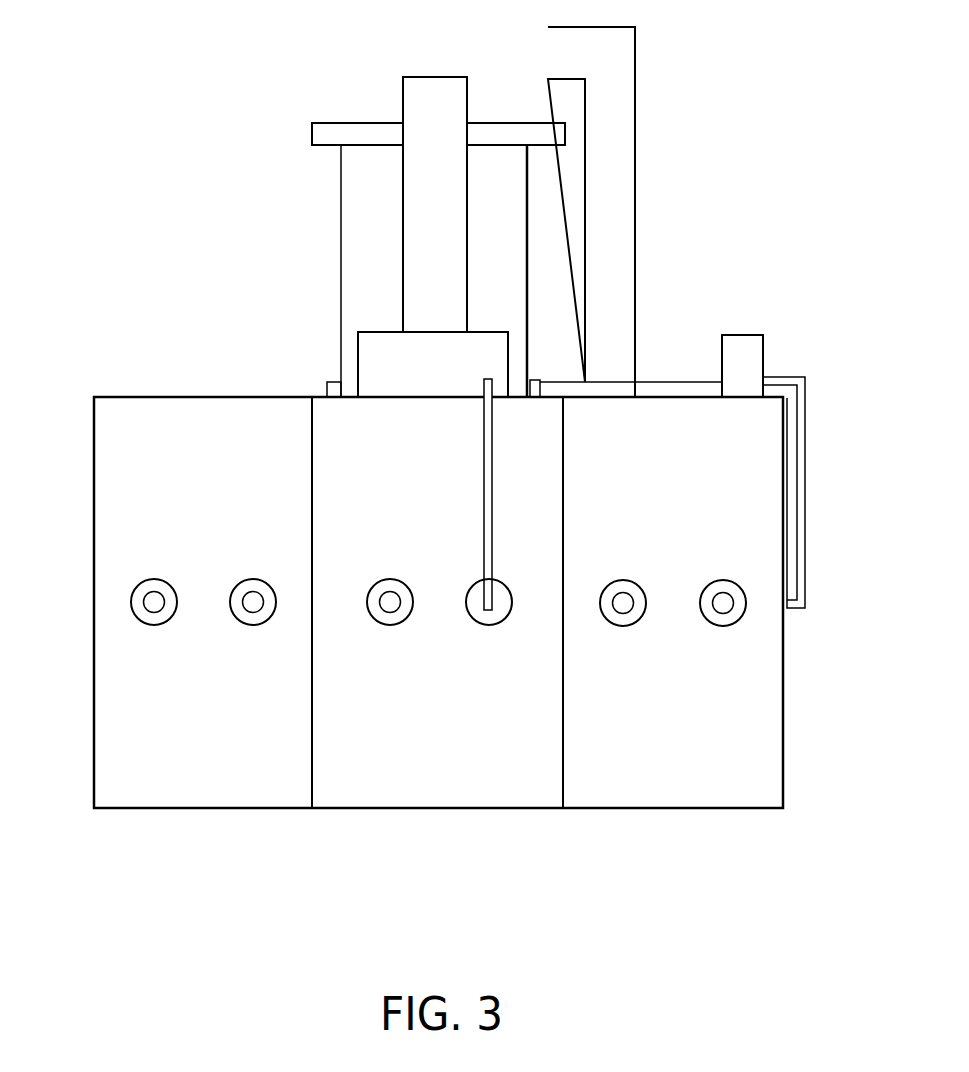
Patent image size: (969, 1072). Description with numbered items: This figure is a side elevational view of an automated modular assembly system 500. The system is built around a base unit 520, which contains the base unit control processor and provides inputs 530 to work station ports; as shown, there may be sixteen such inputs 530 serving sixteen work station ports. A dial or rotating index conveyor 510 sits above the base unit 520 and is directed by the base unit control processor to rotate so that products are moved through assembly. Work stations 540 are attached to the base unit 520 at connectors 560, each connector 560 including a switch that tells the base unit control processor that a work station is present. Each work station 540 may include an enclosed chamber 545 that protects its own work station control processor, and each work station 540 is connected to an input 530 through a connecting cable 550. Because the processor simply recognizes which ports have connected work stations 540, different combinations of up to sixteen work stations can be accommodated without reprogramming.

The automated modular assembly system 500 is at (164, 178).
The dial or rotating index conveyor 510 is at (362, 122).
The base unit 520 is at (275, 808).
The inputs 530 is at (170, 621).
The work station 540 is at (423, 77).
The enclosed chamber 545 is at (490, 332).
The connecting cable 550 is at (484, 495).
The connectors 560 is at (327, 382).